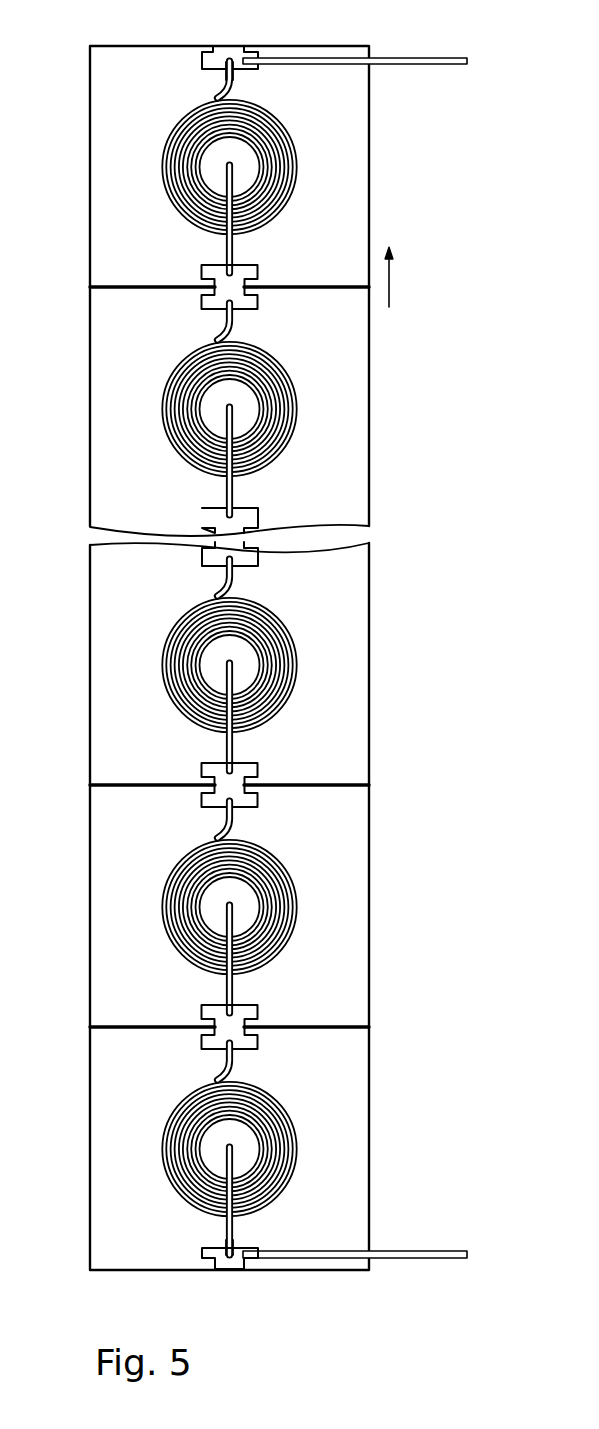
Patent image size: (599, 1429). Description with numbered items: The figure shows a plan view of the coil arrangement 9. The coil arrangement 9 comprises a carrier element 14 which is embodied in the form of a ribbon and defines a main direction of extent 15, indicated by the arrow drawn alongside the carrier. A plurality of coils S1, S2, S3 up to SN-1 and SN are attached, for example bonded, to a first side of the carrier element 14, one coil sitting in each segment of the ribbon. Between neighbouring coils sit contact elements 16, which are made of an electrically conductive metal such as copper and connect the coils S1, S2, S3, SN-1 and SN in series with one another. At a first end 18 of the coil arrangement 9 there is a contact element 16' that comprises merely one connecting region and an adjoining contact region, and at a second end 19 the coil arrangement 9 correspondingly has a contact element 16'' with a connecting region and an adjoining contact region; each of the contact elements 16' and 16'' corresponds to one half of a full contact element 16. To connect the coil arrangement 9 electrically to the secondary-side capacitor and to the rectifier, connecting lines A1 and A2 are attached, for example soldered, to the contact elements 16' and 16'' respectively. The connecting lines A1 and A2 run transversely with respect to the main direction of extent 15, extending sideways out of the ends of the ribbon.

The coil arrangement 9 is at (458, 556).
The carrier element 14 is at (355, 703).
The main direction of extent 15 is at (391, 277).
The contact element 16 is at (378, 793).
The contact element 16' is at (393, 1212).
The contact element 16'' is at (396, 105).
The first end 18 is at (325, 1270).
The second end 19 is at (335, 46).
The connecting line A1 is at (422, 1254).
The connecting line A2 is at (422, 64).
The coil S1 is at (286, 1150).
The coil S2 is at (286, 907).
The coil S3 is at (286, 665).
The coil SN-1 is at (286, 409).
The coil SN is at (286, 166).